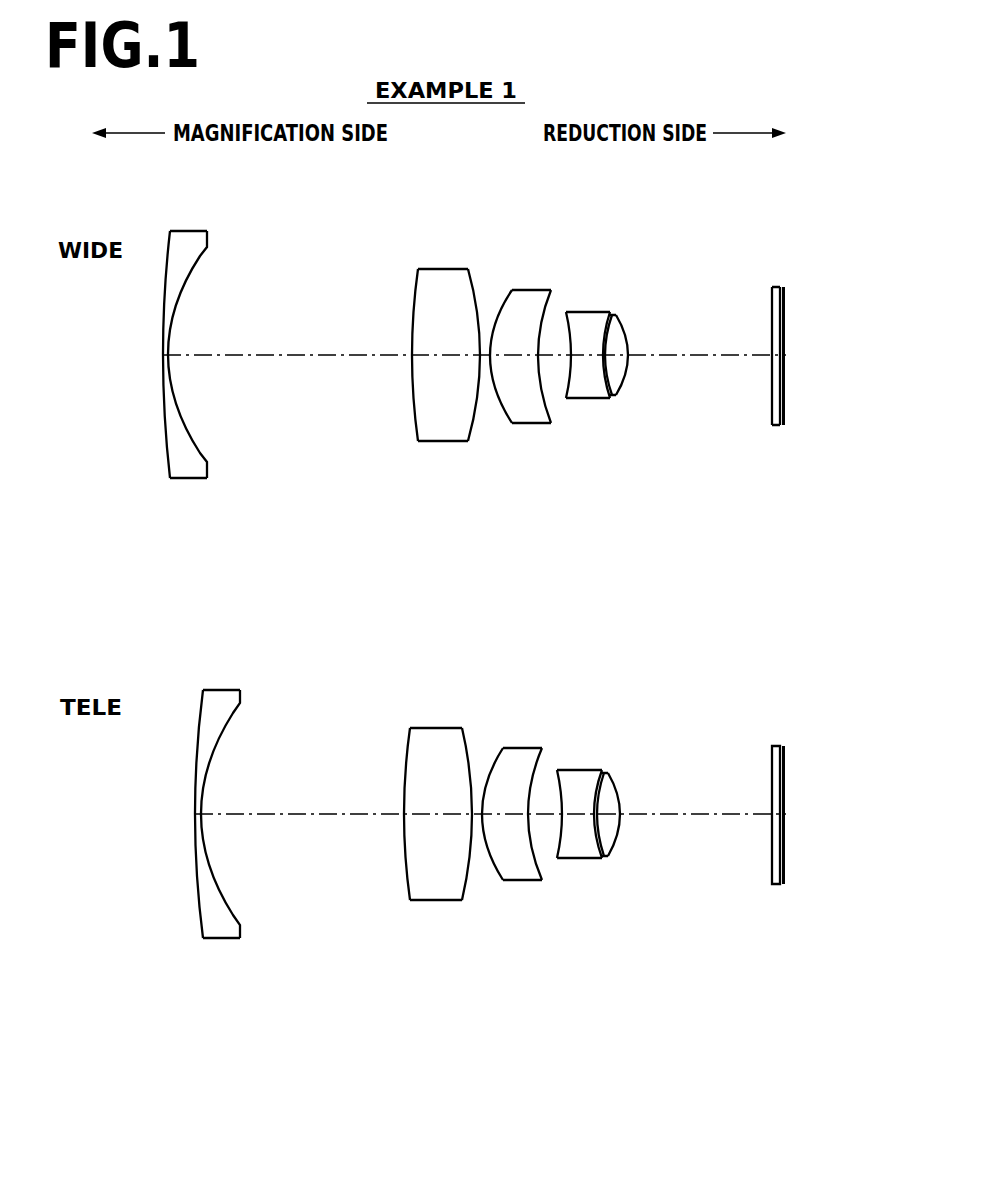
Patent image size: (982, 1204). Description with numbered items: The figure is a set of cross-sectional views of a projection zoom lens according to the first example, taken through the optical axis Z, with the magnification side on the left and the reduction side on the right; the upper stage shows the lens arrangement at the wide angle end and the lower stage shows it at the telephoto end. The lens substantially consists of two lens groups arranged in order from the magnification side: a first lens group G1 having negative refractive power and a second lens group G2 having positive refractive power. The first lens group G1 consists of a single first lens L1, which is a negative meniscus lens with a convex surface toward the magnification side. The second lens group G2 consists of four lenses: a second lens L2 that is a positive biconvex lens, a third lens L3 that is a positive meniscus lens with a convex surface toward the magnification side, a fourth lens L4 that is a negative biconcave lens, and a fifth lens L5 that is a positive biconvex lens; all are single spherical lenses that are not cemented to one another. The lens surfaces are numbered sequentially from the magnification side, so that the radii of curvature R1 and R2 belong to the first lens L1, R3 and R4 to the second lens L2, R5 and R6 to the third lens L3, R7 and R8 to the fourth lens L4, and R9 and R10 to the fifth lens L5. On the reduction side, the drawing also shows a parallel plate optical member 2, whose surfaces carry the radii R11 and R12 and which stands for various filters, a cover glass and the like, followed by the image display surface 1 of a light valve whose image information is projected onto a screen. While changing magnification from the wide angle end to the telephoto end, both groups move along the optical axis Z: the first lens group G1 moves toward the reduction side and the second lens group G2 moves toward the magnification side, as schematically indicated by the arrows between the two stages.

The radius of curvature of the first surface R1 is at (168, 257).
The radius of curvature of the second surface R2 is at (203, 260).
The radius of curvature of the third surface R3 is at (417, 281).
The radius of curvature of the fourth surface R4 is at (476, 280).
The radius of curvature of the fifth surface R5 is at (507, 297).
The radius of curvature of the sixth surface R6 is at (547, 307).
The radius of curvature of the seventh surface R7 is at (569, 325).
The radius of curvature of the eighth surface R8 is at (604, 330).
The radius of curvature of the ninth surface R9 is at (614, 331).
The radius of curvature of the tenth surface R10 is at (632, 336).
The radius of curvature of the eleventh surface R11 is at (773, 289).
The radius of curvature of the twelfth surface R12 is at (783, 303).
The first lens L1 is at (184, 365).
The second lens L2 is at (427, 365).
The third lens L3 is at (519, 365).
The fourth lens L4 is at (583, 365).
The fifth lens L5 is at (653, 365).
The first lens group G1 is at (185, 590).
The second lens group G2 is at (538, 590).
The optical axis Z is at (297, 351).
The image display surface 1 is at (785, 425).
The parallel plate optical member 2 is at (792, 572).